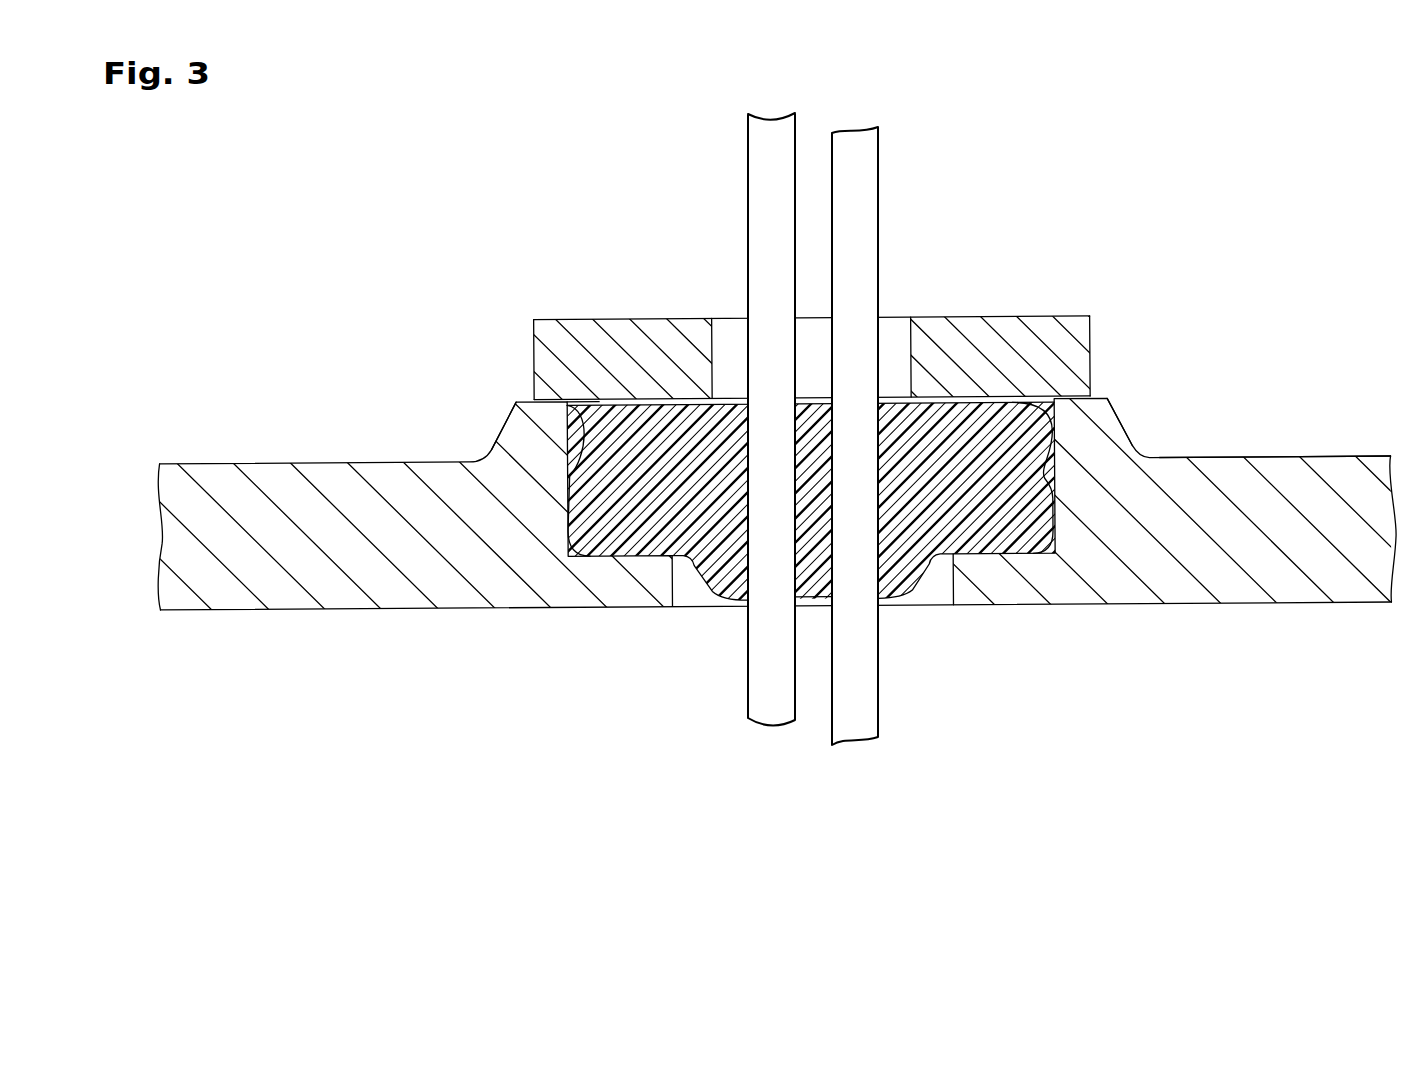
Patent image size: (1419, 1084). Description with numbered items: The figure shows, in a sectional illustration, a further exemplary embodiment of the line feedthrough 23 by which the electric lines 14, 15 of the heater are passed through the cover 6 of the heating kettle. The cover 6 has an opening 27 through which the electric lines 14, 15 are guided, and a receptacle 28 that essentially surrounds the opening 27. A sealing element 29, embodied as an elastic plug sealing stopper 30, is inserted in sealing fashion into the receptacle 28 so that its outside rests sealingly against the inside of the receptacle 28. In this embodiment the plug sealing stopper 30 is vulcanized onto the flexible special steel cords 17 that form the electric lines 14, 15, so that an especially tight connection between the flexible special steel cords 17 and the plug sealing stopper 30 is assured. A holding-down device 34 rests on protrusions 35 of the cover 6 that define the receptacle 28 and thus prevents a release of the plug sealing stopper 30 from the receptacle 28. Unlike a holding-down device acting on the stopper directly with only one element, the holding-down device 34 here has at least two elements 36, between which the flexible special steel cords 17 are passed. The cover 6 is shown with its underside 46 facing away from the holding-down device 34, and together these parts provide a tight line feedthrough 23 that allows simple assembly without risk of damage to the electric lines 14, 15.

The cover 6 is at (248, 582).
The electric line 14 is at (756, 694).
The electric line 15 is at (858, 713).
The flexible special steel cords 17 is at (827, 463).
The line feedthrough 23 is at (652, 693).
The opening 27 is at (678, 585).
The receptacle 28 is at (590, 398).
The sealing element 29 is at (1004, 632).
The plug sealing stopper 30 is at (915, 576).
The holding-down device 34 is at (630, 340).
The protrusions 35 is at (525, 442).
The elements 36 is at (568, 342).
The underside 46 is at (1298, 458).